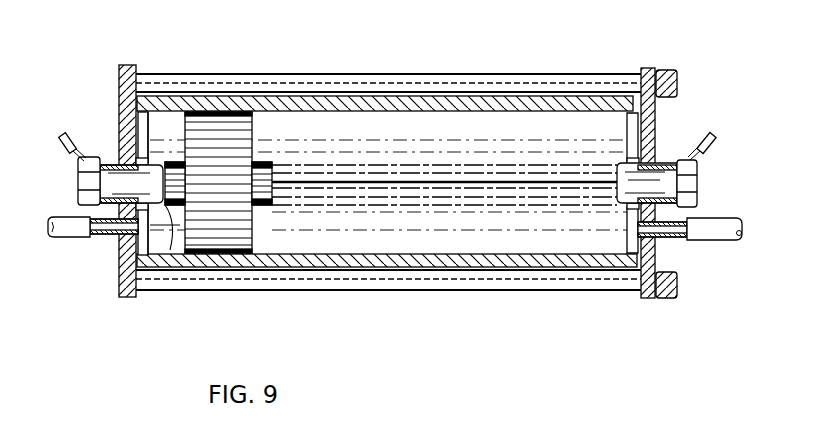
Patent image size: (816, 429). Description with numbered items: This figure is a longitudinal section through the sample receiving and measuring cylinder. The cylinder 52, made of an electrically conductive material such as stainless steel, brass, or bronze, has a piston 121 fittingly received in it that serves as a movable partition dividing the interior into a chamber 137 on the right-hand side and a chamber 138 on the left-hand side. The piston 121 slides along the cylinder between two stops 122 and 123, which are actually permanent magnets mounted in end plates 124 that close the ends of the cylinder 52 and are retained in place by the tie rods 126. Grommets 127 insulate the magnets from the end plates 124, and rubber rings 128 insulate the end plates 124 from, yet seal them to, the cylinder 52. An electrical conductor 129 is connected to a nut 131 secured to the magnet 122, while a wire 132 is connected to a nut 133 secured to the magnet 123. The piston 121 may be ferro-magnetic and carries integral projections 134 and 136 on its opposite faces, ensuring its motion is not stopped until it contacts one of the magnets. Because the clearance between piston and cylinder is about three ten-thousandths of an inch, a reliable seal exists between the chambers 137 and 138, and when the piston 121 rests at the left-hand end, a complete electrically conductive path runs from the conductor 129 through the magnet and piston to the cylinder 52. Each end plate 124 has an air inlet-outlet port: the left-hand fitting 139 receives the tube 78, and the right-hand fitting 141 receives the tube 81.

The cylinder 52 is at (480, 270).
The tube 78 is at (84, 238).
The tube 81 is at (715, 242).
The piston 121 is at (218, 257).
The stop (permanent magnet) 122 is at (112, 168).
The stop (permanent magnet) 123 is at (665, 182).
The end plate 124 is at (125, 65).
The tie rod 126 is at (253, 75).
The grommet 127 is at (140, 160).
The rubber ring 128 is at (145, 112).
The electrical conductor 129 is at (62, 140).
The nut 131 is at (82, 183).
The wire 132 is at (712, 138).
The nut 133 is at (692, 185).
The projection 134 is at (181, 210).
The projection 136 is at (265, 207).
The chamber 137 is at (385, 243).
The chamber 138 is at (163, 243).
The fitting 139 is at (105, 235).
The fitting 141 is at (665, 238).